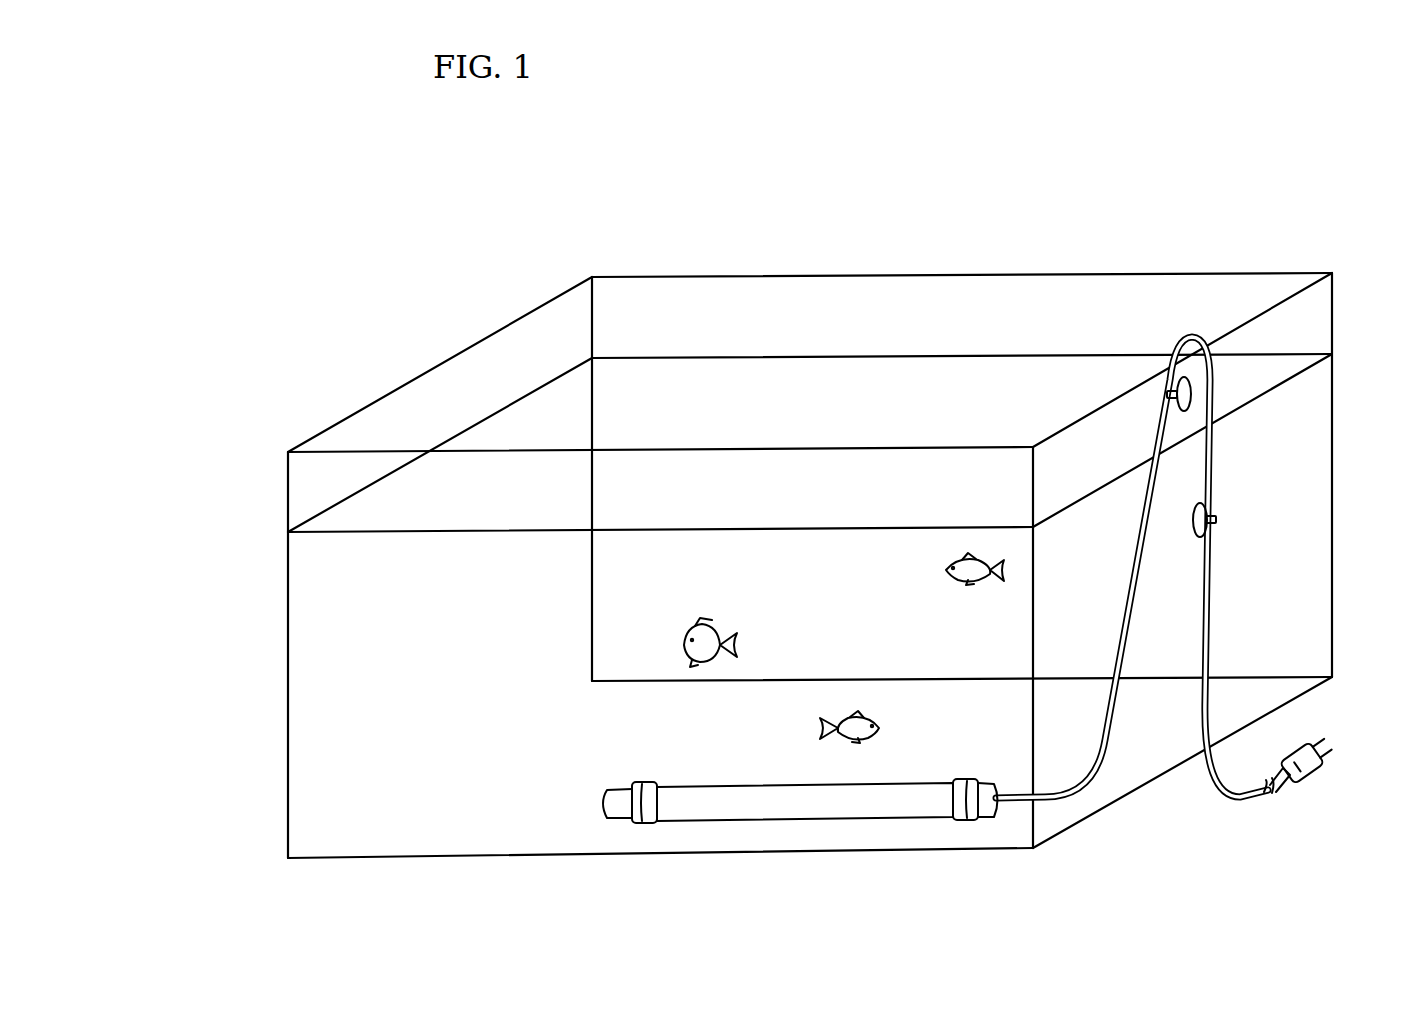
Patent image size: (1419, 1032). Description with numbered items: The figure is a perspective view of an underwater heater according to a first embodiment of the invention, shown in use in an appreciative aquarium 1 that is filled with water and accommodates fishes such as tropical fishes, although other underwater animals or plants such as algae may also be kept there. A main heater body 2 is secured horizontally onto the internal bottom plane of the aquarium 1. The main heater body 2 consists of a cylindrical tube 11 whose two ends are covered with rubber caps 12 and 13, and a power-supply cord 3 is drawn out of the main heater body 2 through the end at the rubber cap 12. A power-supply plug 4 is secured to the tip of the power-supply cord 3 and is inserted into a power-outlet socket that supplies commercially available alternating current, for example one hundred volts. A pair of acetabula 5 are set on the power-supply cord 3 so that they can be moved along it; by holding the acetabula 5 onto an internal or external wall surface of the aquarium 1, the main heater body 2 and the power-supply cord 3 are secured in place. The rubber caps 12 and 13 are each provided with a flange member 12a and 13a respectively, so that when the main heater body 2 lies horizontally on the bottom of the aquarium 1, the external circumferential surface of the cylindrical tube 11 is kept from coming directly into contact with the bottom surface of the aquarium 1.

The aquarium 1 is at (287, 622).
The main heater body 2 is at (798, 859).
The power-supply cord 3 is at (1103, 753).
The power-supply plug 4 is at (1315, 778).
The acetabula 5 is at (1167, 396).
The cylindrical tube 11 is at (842, 810).
The rubber cap 12 is at (978, 807).
The flange member 12a is at (957, 821).
The rubber cap 13 is at (606, 812).
The flange member 13a is at (642, 824).